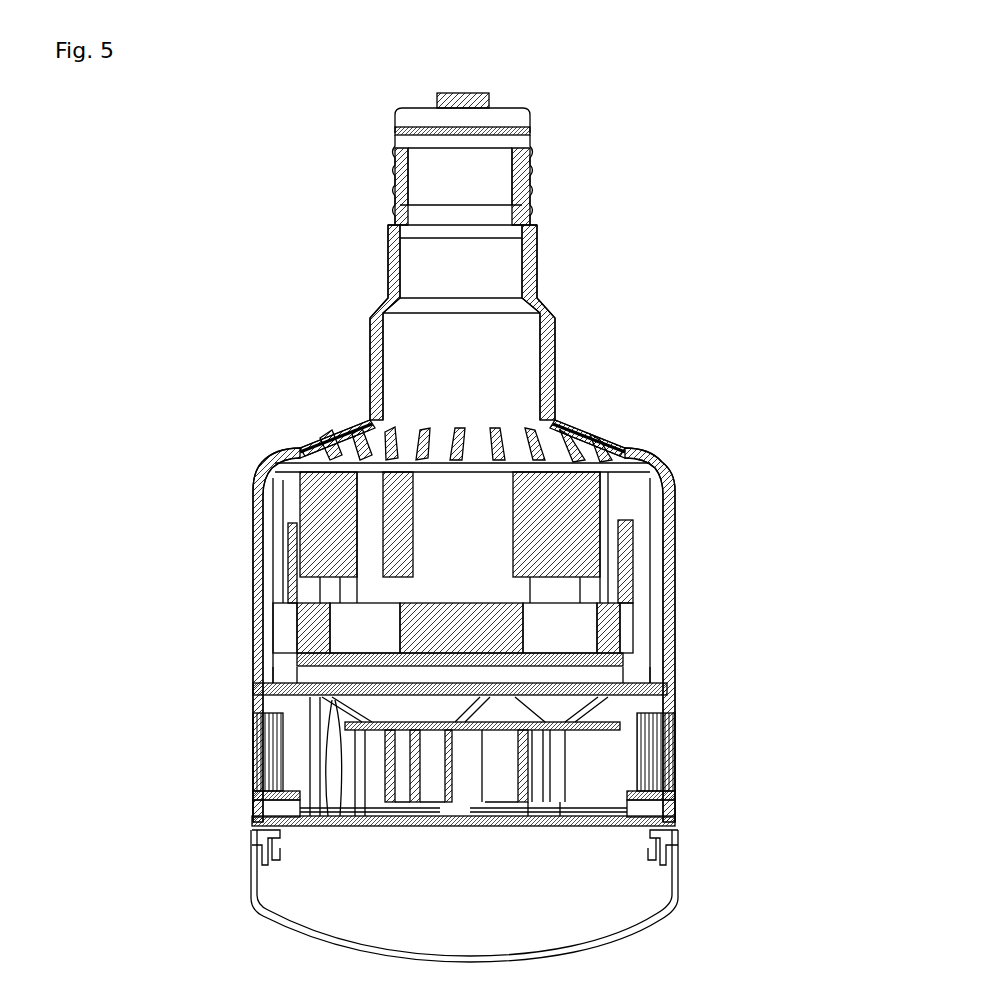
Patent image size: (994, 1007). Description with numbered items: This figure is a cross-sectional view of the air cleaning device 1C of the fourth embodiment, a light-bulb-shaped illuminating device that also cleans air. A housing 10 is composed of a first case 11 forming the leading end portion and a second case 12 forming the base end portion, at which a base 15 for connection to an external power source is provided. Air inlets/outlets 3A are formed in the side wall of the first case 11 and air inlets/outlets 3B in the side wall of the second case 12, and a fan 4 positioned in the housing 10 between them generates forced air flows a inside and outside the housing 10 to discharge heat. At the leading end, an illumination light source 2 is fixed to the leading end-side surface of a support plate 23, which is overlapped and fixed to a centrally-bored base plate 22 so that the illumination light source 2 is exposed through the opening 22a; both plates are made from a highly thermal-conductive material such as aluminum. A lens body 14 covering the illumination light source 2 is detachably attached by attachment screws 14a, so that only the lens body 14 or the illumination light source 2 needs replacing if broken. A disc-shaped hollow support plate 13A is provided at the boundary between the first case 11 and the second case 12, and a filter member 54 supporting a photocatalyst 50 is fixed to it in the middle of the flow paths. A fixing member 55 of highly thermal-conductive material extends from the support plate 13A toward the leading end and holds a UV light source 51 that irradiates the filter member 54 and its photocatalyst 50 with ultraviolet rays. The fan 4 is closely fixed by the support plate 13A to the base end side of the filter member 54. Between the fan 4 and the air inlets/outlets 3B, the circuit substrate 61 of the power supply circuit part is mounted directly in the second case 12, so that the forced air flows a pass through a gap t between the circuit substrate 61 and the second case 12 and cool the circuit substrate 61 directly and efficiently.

The air cleaning device 1C is at (645, 246).
The base 15 is at (395, 150).
The housing 10 is at (678, 578).
The second case 12 is at (674, 535).
The air inlets/outlets 3B is at (298, 442).
The forced air flows a is at (332, 428).
The gap t is at (265, 458).
The circuit substrate 61 is at (593, 484).
The fan 4 is at (503, 602).
The UV light source 51 is at (505, 760).
The filter member 54 is at (615, 642).
The photocatalyst 50 is at (632, 672).
The support plate 13A is at (680, 700).
The air inlets/outlets 3A is at (248, 727).
The first case 11 is at (680, 800).
The fixing member 55 is at (347, 822).
The support plate 23 is at (376, 825).
The illumination light source 2 is at (443, 826).
The opening 22a is at (530, 826).
The base plate 22 is at (580, 826).
The lens body 14 is at (605, 922).
The attachment screws 14a is at (252, 838).